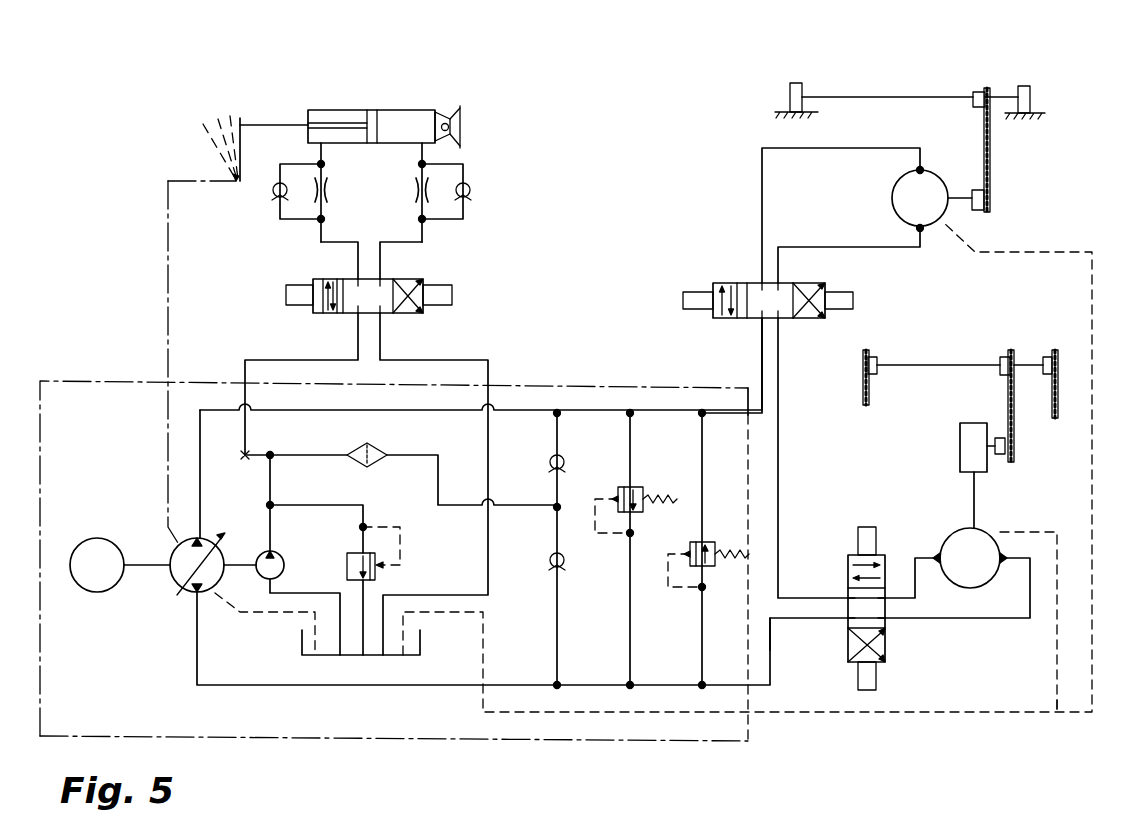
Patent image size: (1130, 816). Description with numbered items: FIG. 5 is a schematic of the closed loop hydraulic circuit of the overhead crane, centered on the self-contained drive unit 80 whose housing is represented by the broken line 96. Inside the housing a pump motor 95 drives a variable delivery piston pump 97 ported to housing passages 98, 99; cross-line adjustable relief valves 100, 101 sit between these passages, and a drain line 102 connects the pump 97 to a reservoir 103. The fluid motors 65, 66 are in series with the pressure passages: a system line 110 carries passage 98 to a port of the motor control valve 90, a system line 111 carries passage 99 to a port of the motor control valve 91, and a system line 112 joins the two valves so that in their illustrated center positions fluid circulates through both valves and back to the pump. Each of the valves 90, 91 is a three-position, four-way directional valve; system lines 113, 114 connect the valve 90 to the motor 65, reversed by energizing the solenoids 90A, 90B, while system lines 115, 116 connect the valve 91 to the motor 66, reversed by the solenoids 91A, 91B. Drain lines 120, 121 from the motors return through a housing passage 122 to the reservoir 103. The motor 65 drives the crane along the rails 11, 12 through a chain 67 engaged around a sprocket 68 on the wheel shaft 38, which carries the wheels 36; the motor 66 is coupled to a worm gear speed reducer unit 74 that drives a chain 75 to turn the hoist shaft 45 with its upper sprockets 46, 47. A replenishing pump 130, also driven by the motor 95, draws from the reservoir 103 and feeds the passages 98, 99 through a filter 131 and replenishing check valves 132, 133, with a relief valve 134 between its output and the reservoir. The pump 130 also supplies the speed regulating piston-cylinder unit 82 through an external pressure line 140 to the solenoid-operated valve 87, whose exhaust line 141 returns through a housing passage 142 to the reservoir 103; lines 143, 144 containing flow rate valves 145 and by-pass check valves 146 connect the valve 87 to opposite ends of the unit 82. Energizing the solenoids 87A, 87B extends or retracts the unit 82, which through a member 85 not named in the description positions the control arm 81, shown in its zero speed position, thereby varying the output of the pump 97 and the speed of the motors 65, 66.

The rail 11 is at (1034, 116).
The rail 12 is at (806, 112).
The wheels 36 is at (790, 94).
The wheel shaft 38 is at (838, 97).
The rotatable shaft 45 is at (976, 362).
The upper sprocket 46 is at (1043, 356).
The upper sprocket 47 is at (876, 356).
The fluid motor 65 is at (898, 192).
The fluid motor 66 is at (960, 530).
The chain 67 is at (990, 148).
The sprocket 68 is at (972, 98).
The worm gear speed reducer unit 74 is at (960, 448).
The chain 75 is at (1008, 410).
The drive unit 80 is at (112, 380).
The control arm 81 is at (240, 142).
The piston-cylinder unit 82 is at (407, 108).
The piston rod 85 is at (292, 125).
The solenoid-operated valve 87 is at (324, 313).
The valve solenoid 87A is at (452, 295).
The valve solenoid 87B is at (286, 297).
The motor control valve 90 is at (798, 320).
The valve solenoid 90A is at (694, 289).
The valve solenoid 90B is at (866, 266).
The motor control valve 91 is at (887, 640).
The valve solenoid 91A is at (870, 526).
The valve solenoid 91B is at (876, 686).
The pump motor 95 is at (100, 538).
The housing 96 is at (366, 739).
The variable delivery piston pump 97 is at (181, 591).
The housing passage 98 is at (200, 470).
The housing passage 99 is at (194, 647).
The cross-line adjustable relief valve 100 is at (624, 486).
The cross-line adjustable relief valve 101 is at (694, 543).
The drain line 102 is at (268, 614).
The reservoir 103 is at (420, 639).
The system line 110 is at (754, 355).
The system line 111 is at (774, 640).
The system line 112 is at (783, 466).
The system line 113 is at (762, 184).
The system line 114 is at (902, 246).
The system line 115 is at (925, 558).
The system line 116 is at (971, 626).
The drain line 120 is at (1060, 250).
The drain line 121 is at (1057, 700).
The passage 122 is at (574, 706).
The replenishing pump 130 is at (276, 548).
The filter 131 is at (370, 443).
The replenishing check valve 132 is at (552, 459).
The replenishing check valve 133 is at (552, 564).
The relief valve 134 is at (347, 565).
The external system line 140 is at (245, 360).
The external exhaust line 141 is at (490, 360).
The housing passage 142 is at (487, 448).
The system line 143 is at (356, 262).
The system line 144 is at (384, 262).
The flow rate valve 145 is at (330, 187).
The by-pass check valve 146 is at (272, 198).